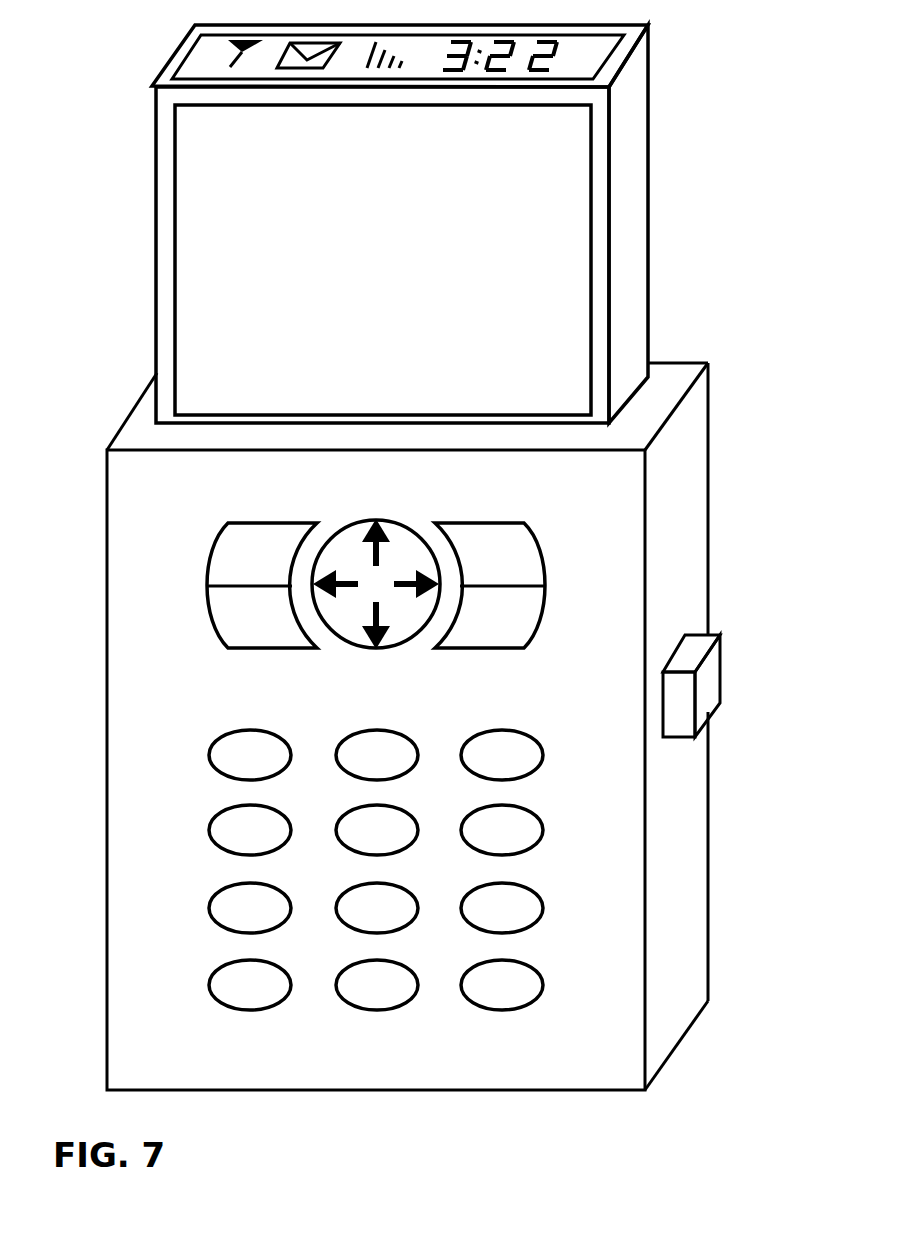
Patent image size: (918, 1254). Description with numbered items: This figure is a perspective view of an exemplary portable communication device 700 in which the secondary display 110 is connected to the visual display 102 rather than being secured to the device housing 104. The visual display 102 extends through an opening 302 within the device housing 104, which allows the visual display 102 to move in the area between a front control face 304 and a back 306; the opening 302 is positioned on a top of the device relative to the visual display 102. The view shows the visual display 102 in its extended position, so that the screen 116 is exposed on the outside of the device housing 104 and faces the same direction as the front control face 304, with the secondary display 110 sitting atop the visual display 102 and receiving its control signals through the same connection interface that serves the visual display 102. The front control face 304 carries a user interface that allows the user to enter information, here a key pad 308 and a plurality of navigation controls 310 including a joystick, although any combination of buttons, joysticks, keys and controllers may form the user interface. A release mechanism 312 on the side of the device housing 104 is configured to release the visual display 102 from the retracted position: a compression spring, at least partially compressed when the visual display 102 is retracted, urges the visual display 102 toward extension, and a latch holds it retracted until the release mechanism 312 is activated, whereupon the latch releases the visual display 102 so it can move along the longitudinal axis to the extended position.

The portable communication device 700 is at (702, 98).
The visual display 102 is at (649, 201).
The screen 116 is at (593, 180).
The secondary display 110 is at (172, 58).
The opening 302 is at (157, 409).
The back 306 is at (710, 342).
The device housing 104 is at (709, 940).
The release mechanism 312 is at (701, 668).
The navigation controls 310 is at (160, 568).
The front control face 304 is at (152, 668).
The key pad 308 is at (140, 808).